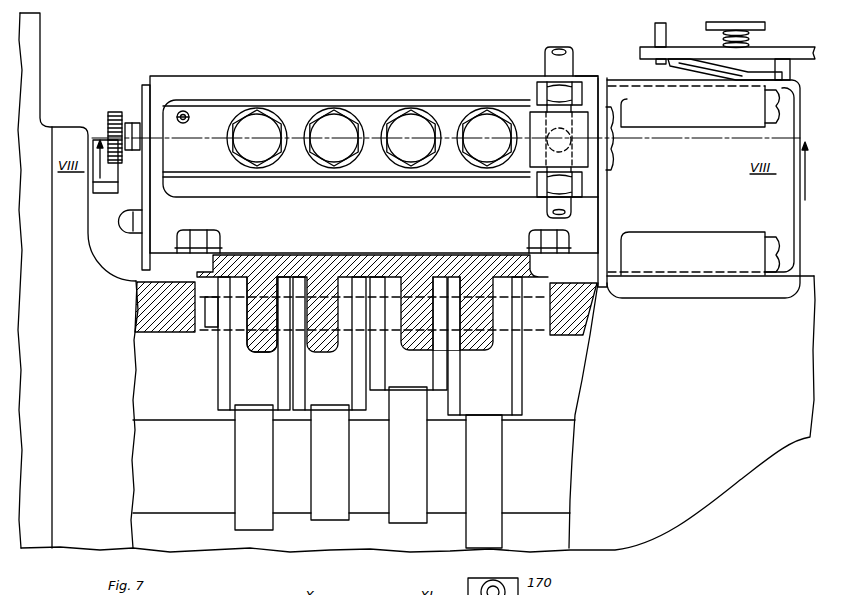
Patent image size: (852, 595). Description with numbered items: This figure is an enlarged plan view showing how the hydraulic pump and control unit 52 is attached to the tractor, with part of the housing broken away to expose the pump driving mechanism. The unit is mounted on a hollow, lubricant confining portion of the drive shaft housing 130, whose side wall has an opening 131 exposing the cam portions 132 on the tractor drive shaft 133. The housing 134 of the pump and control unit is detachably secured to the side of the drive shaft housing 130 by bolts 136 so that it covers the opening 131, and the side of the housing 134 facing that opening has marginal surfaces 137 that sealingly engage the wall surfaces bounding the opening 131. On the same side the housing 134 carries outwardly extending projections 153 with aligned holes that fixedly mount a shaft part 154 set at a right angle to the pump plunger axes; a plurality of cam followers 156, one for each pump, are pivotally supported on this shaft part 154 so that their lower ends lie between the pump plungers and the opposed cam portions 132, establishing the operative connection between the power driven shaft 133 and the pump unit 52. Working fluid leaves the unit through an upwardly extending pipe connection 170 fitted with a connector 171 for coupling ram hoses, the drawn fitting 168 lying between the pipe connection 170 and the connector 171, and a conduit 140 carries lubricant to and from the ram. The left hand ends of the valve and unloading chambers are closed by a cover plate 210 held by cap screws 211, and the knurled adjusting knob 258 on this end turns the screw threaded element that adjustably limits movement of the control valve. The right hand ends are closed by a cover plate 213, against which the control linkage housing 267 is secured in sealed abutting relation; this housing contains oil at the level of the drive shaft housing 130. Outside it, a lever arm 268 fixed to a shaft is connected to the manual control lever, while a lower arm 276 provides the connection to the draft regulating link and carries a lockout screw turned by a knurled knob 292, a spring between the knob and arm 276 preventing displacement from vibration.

The drive shaft housing 130 is at (73, 129).
The knurled adjusting knob 258 is at (117, 111).
The tractor drive shaft 133 is at (162, 420).
The housing 134 is at (416, 77).
The marginal surfaces 137 is at (160, 252).
The cover plate 210 is at (141, 256).
The cap screws 211 is at (125, 228).
The bolts 136 is at (218, 235).
The opening 131 is at (540, 279).
The hydraulic pump unit 52 is at (366, 281).
The projections 153 is at (250, 350).
The shaft part 154 is at (210, 328).
The cam followers 156 is at (218, 374).
The cam portions 132 is at (390, 478).
The conduit 140 is at (544, 60).
The connector 171 is at (537, 93).
The fitting body 168 is at (555, 133).
The pipe connection 170 is at (532, 170).
The cover plate 213 is at (605, 266).
The control linkage housing 267 is at (790, 281).
The lever arm 268 is at (640, 51).
The knurled knob 292 is at (704, 25).
The arm 276 is at (794, 55).